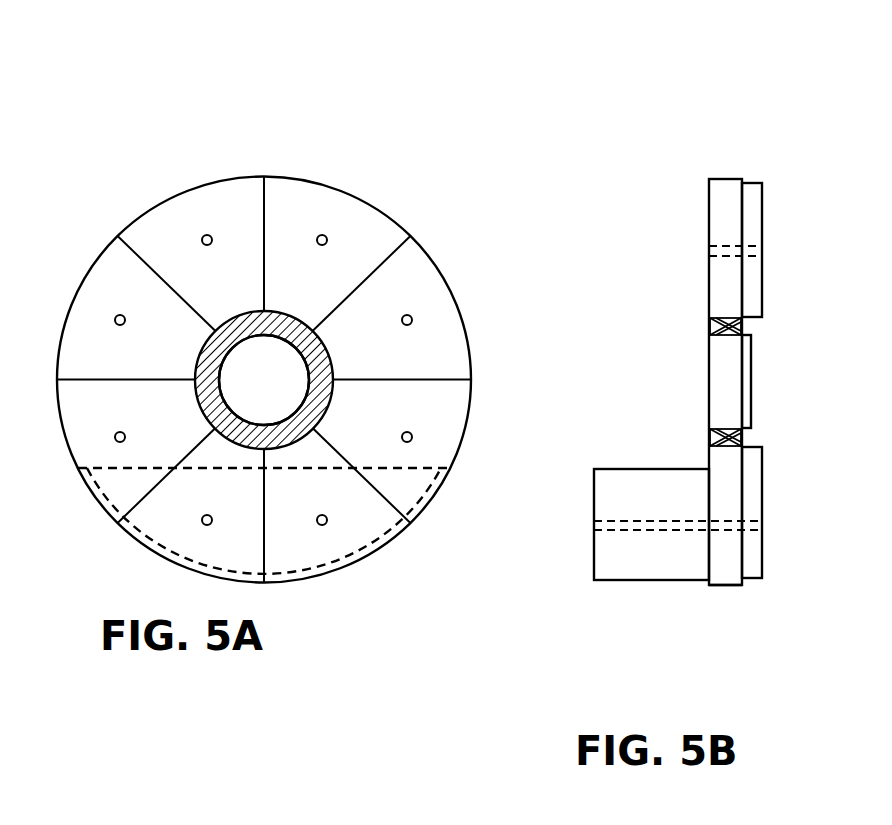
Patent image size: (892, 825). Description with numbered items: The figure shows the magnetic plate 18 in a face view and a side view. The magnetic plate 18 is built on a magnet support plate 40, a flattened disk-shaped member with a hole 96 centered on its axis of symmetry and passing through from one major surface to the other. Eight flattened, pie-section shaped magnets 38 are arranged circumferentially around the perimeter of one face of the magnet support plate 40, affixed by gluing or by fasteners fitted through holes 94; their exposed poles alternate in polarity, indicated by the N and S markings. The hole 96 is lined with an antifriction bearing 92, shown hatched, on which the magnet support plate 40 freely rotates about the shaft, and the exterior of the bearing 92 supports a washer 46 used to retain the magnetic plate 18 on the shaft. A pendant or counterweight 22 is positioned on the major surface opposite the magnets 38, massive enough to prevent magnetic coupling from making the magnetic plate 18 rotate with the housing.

In FIG. 5A, the magnetic plate 18 is at (345, 118).
In FIG. 5B, the magnetic plate 18 is at (750, 180).
In FIG. 5A, the counterweight 22 is at (407, 527).
In FIG. 5B, the counterweight 22 is at (622, 564).
In FIG. 5A, the magnets 38 is at (392, 308).
In FIG. 5B, the magnets 38 is at (756, 566).
In FIG. 5B, the magnet support plate 40 is at (724, 575).
In FIG. 5B, the washer 46 is at (748, 388).
In FIG. 5A, the antifriction bearing 92 is at (298, 331).
In FIG. 5B, the antifriction bearing 92 is at (712, 340).
In FIG. 5A, the holes 94 is at (113, 318).
In FIG. 5A, the hole 96 is at (303, 383).